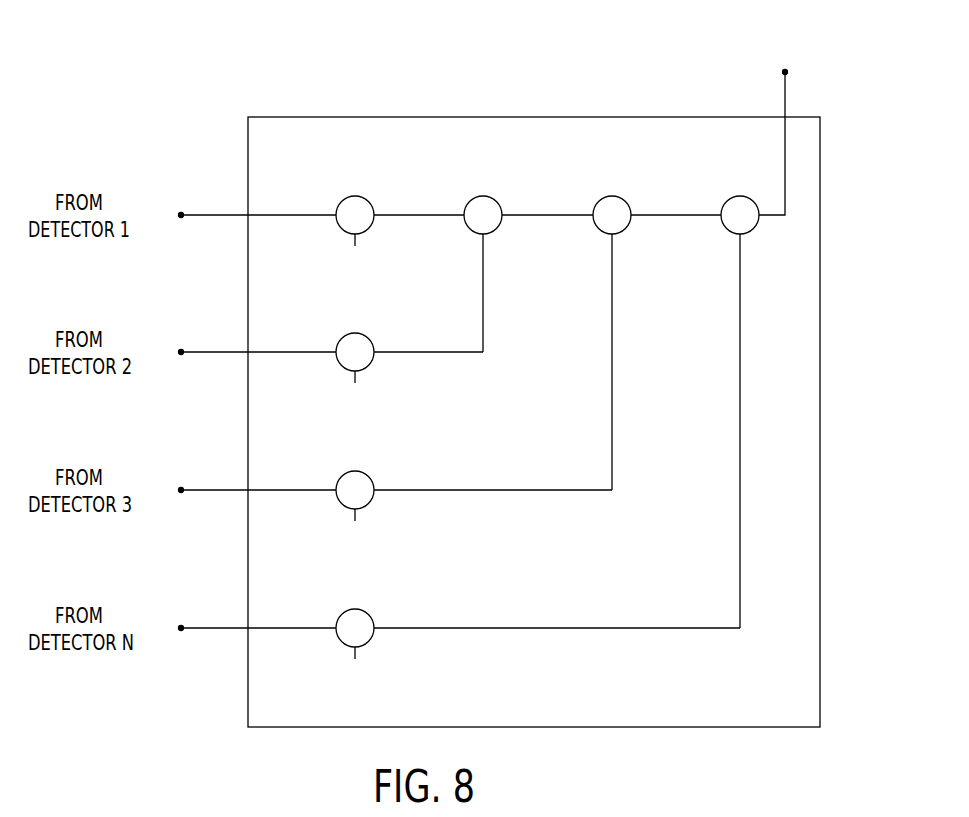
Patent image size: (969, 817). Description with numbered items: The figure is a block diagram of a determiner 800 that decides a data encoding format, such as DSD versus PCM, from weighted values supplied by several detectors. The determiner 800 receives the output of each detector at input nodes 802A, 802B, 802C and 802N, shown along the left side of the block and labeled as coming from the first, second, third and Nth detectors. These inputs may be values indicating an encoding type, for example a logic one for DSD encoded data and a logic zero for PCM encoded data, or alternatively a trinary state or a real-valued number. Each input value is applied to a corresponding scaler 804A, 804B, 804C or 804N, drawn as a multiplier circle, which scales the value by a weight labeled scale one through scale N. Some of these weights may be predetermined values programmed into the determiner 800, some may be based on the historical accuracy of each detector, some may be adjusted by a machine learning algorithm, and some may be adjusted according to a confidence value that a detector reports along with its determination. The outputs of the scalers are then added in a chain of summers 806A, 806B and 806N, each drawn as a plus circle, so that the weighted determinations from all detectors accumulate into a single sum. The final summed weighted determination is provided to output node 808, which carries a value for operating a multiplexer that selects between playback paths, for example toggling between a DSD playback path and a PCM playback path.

The determiner 800 is at (541, 117).
The input node 802A is at (181, 215).
The input node 802B is at (181, 352).
The input node 802C is at (181, 490).
The input node 802N is at (181, 628).
The scaler 804A is at (341, 202).
The scaler 804B is at (368, 339).
The scaler 804C is at (368, 477).
The scaler 804N is at (368, 615).
The summer 806A is at (469, 202).
The summer 806B is at (598, 202).
The summer 806N is at (726, 202).
The output node 808 is at (785, 72).